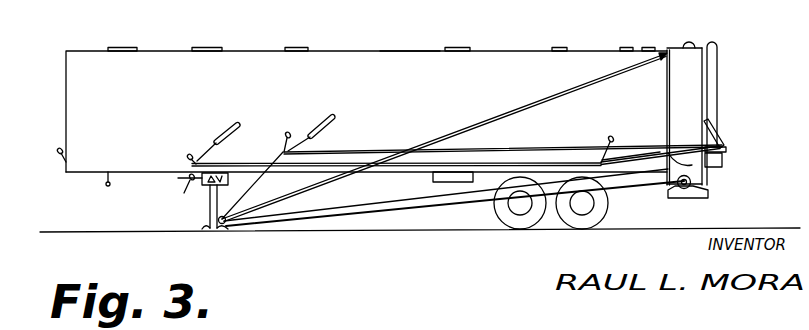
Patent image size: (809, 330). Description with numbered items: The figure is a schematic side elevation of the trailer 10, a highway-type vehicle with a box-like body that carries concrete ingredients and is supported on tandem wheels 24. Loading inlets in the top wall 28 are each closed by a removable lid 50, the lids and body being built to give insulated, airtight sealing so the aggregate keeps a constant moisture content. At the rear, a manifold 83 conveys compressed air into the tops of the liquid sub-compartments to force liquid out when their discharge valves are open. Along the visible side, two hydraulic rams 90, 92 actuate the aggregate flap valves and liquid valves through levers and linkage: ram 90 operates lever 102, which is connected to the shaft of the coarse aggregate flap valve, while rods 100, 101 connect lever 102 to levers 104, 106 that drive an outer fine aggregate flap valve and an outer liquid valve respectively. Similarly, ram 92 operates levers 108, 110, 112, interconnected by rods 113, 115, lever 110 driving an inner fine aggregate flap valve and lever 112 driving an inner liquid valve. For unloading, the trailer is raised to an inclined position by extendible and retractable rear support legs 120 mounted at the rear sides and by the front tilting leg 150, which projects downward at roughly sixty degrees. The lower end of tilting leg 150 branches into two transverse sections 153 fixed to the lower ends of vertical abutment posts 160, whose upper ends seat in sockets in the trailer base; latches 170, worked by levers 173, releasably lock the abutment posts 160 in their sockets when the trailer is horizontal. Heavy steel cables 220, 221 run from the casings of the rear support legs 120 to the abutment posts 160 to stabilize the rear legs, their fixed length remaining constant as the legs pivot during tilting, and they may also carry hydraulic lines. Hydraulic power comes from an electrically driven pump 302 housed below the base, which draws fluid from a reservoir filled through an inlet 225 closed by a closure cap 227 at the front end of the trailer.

The trailer 10 is at (365, 104).
The tandem wheels 24 is at (578, 226).
The top wall 28 is at (412, 48).
The removable lid 50 is at (130, 47).
The manifold 83 is at (714, 78).
The hydraulic ram 90 is at (230, 125).
The hydraulic ram 92 is at (327, 120).
The rod 100 is at (328, 167).
The rod 101 is at (722, 166).
The lever 102 is at (192, 155).
The lever 104 is at (612, 163).
The lever 106 is at (726, 146).
The lever 108 is at (287, 132).
The lever 110 is at (610, 137).
The lever 112 is at (709, 128).
The rod 113 is at (380, 152).
The rod 115 is at (645, 149).
The rear support leg 120 is at (690, 98).
The tilting leg 150 is at (252, 194).
The transverse sections 153 is at (238, 215).
The abutment post 160 is at (210, 212).
The latch 170 is at (212, 207).
The lever 173 is at (187, 195).
The cable 220 is at (482, 122).
The cable 221 is at (352, 207).
The inlet 225 is at (63, 158).
The closure cap 227 is at (60, 149).
The pump 302 is at (462, 171).